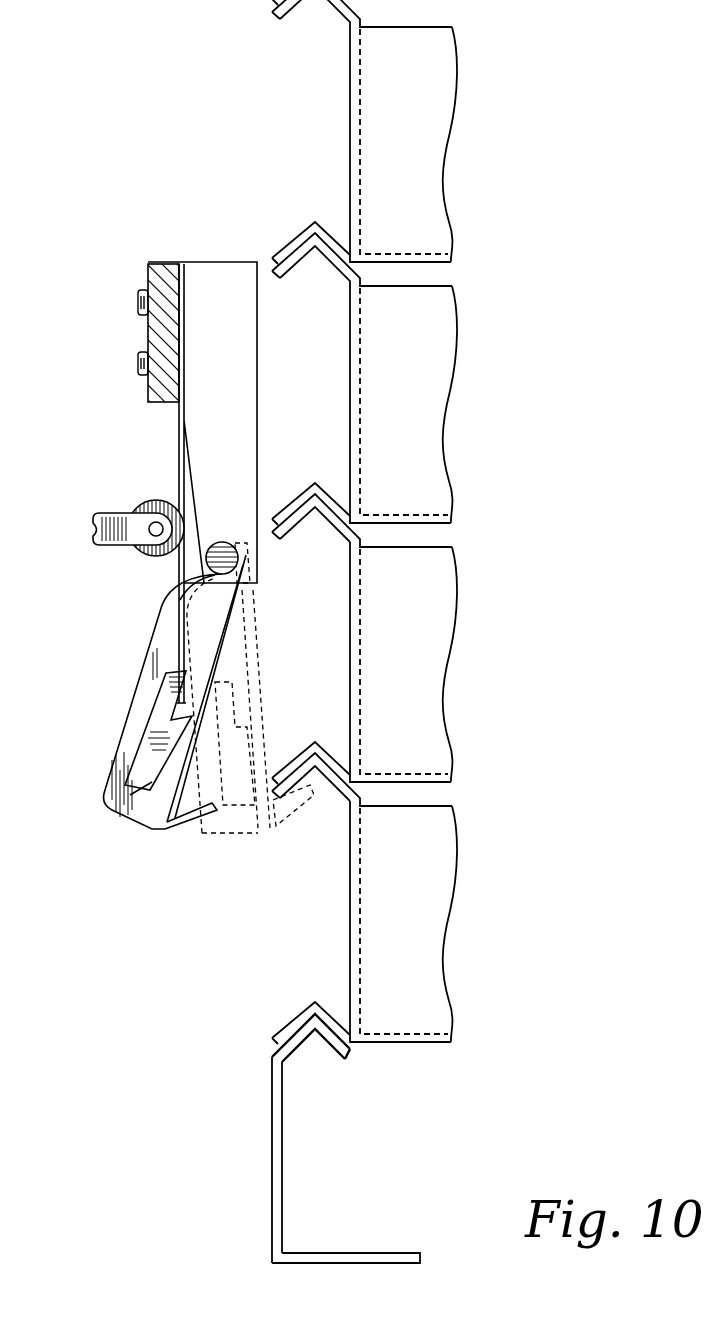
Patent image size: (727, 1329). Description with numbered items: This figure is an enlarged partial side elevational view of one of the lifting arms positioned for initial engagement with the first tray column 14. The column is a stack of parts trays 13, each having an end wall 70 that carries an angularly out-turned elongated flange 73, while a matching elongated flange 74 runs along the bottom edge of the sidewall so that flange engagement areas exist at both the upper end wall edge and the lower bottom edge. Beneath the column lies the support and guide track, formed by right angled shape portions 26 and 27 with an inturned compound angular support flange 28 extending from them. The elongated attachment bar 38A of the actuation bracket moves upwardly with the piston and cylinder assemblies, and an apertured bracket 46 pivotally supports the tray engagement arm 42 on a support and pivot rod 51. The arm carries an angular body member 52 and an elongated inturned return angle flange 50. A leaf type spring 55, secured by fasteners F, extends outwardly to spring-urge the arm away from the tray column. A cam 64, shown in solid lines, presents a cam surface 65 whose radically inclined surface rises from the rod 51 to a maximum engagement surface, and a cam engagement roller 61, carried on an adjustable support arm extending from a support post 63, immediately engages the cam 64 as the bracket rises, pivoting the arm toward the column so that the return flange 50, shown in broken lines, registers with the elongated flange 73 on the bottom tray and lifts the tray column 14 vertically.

The parts tray 13 is at (428, 985).
The first tray column 14 is at (465, 868).
The right angled shape portion 26 is at (338, 1253).
The right angled shape portion 27 is at (278, 1185).
The inturned compound angular support flange 28 is at (292, 1053).
The end wall 70 is at (350, 668).
The angularly out-turned elongated flange 73 is at (338, 792).
The elongated flange 74 is at (298, 1023).
The elongated attachment bar 38A is at (148, 330).
The fasteners F is at (138, 362).
The apertured bracket 46 is at (220, 420).
The leaf type spring 55 is at (178, 465).
The cam engagement roller 61 is at (136, 504).
The support post 63 is at (100, 530).
The support and pivot rod 51 is at (207, 563).
The cam surface 65 is at (140, 677).
The cam 64 is at (132, 743).
The tray engagement arm 42 is at (173, 773).
The angular body member 52 is at (150, 790).
The inturned return angle flange 50 is at (190, 815).